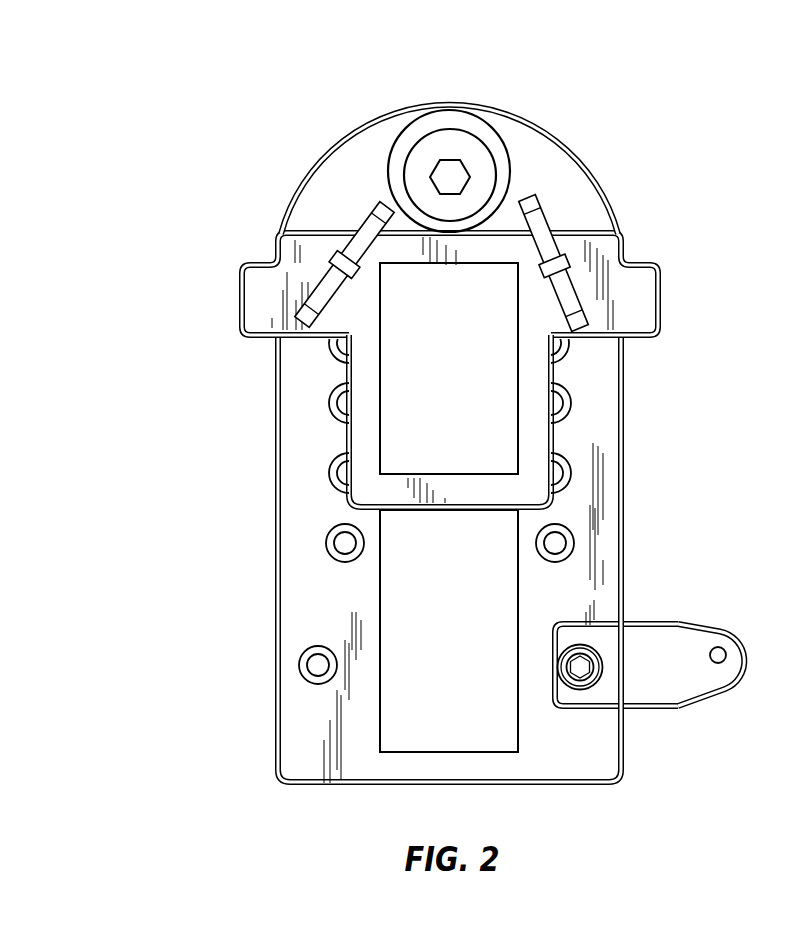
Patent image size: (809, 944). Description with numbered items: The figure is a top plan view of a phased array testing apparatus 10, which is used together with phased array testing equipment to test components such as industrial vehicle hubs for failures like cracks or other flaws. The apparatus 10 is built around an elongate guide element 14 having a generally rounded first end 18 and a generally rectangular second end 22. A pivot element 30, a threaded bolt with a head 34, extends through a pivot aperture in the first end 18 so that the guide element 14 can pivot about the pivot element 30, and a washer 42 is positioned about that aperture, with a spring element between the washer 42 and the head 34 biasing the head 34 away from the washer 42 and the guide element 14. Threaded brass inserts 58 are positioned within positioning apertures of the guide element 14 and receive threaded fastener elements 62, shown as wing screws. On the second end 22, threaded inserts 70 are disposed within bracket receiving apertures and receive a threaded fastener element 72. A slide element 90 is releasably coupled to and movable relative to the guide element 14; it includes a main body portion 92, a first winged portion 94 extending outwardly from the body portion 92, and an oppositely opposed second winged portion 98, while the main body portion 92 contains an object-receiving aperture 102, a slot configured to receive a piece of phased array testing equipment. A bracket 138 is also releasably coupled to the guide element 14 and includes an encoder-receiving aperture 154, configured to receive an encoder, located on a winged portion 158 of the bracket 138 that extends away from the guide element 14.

The phased array testing apparatus 10 is at (197, 182).
The guide element 14 is at (271, 648).
The first end 18 is at (550, 172).
The second end 22 is at (365, 768).
The pivot element 30 is at (437, 152).
The head 34 is at (453, 148).
The washer 42 is at (494, 140).
The threaded inserts 58 is at (333, 350).
The threaded fastener elements 62 is at (322, 289).
The threaded inserts 70 is at (318, 680).
The threaded fastener element 72 is at (583, 680).
The slide element 90 is at (327, 247).
The main body portion 92 is at (365, 362).
The first winged portion 94 is at (659, 296).
The second winged portion 98 is at (241, 297).
The object-receiving aperture 102 is at (465, 430).
The bracket 138 is at (657, 651).
The encoder-receiving aperture 154 is at (725, 655).
The winged portion 158 is at (700, 680).